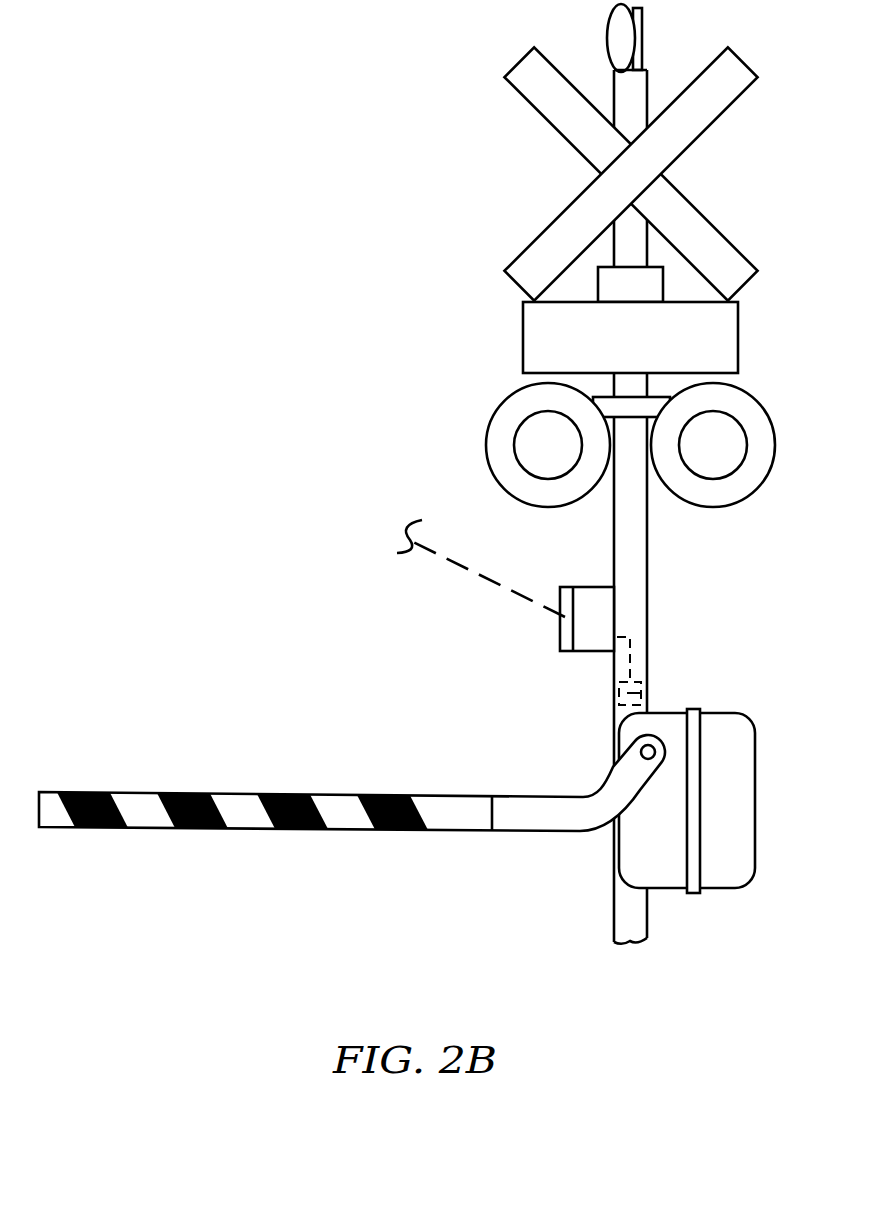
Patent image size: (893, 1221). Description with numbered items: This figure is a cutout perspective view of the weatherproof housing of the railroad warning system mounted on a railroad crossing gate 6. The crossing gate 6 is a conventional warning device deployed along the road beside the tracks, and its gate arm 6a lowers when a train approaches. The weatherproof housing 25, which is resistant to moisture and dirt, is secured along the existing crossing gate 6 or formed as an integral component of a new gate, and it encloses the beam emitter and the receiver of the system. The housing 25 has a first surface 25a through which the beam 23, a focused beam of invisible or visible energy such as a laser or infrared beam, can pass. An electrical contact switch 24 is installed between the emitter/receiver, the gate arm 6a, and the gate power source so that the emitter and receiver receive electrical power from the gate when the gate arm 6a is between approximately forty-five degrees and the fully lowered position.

The railroad crossing gate 6 is at (702, 181).
The gate arm 6a is at (147, 810).
The beam 23 is at (478, 568).
The electrical contact switch 24 is at (645, 695).
The weatherproof housing 25 is at (597, 617).
The first surface 25a is at (565, 638).